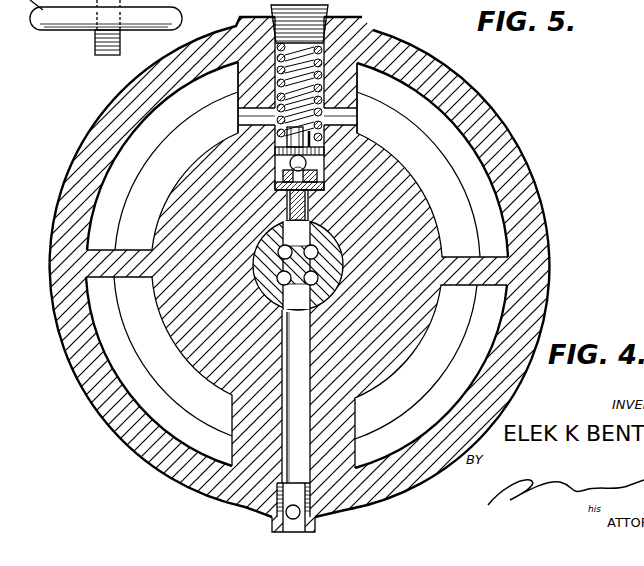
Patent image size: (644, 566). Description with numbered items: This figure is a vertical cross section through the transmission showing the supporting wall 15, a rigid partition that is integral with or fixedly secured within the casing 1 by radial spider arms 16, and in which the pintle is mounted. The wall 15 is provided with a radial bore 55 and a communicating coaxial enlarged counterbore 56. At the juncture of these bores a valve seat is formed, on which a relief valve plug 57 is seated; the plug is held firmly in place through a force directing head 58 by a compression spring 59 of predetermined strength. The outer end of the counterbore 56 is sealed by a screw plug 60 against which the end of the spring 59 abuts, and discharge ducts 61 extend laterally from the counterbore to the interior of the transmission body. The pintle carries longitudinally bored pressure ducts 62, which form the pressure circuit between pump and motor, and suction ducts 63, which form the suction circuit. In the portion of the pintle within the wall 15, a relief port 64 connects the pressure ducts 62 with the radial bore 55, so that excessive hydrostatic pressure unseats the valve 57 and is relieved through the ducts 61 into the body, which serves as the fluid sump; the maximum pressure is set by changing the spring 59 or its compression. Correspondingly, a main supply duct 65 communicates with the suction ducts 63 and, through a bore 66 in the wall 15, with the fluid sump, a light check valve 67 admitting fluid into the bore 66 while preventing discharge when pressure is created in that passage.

The casing 1 is at (537, 203).
The supporting wall 15 is at (431, 335).
The radial spider arms 16 is at (490, 257).
The radial bore 55 is at (350, 232).
The counterbore 56 is at (312, 176).
The relief valve plug 57 is at (306, 204).
The force directing head 58 is at (312, 140).
The compression spring 59 is at (320, 55).
The screw plug 60 is at (336, 15).
The discharge ducts 61 is at (243, 118).
The pressure ducts 62 is at (278, 250).
The suction ducts 63 is at (277, 278).
The relief port 64 is at (298, 265).
The main supply duct 65 is at (296, 277).
The bore 66 is at (293, 455).
The check valve 67 is at (287, 504).